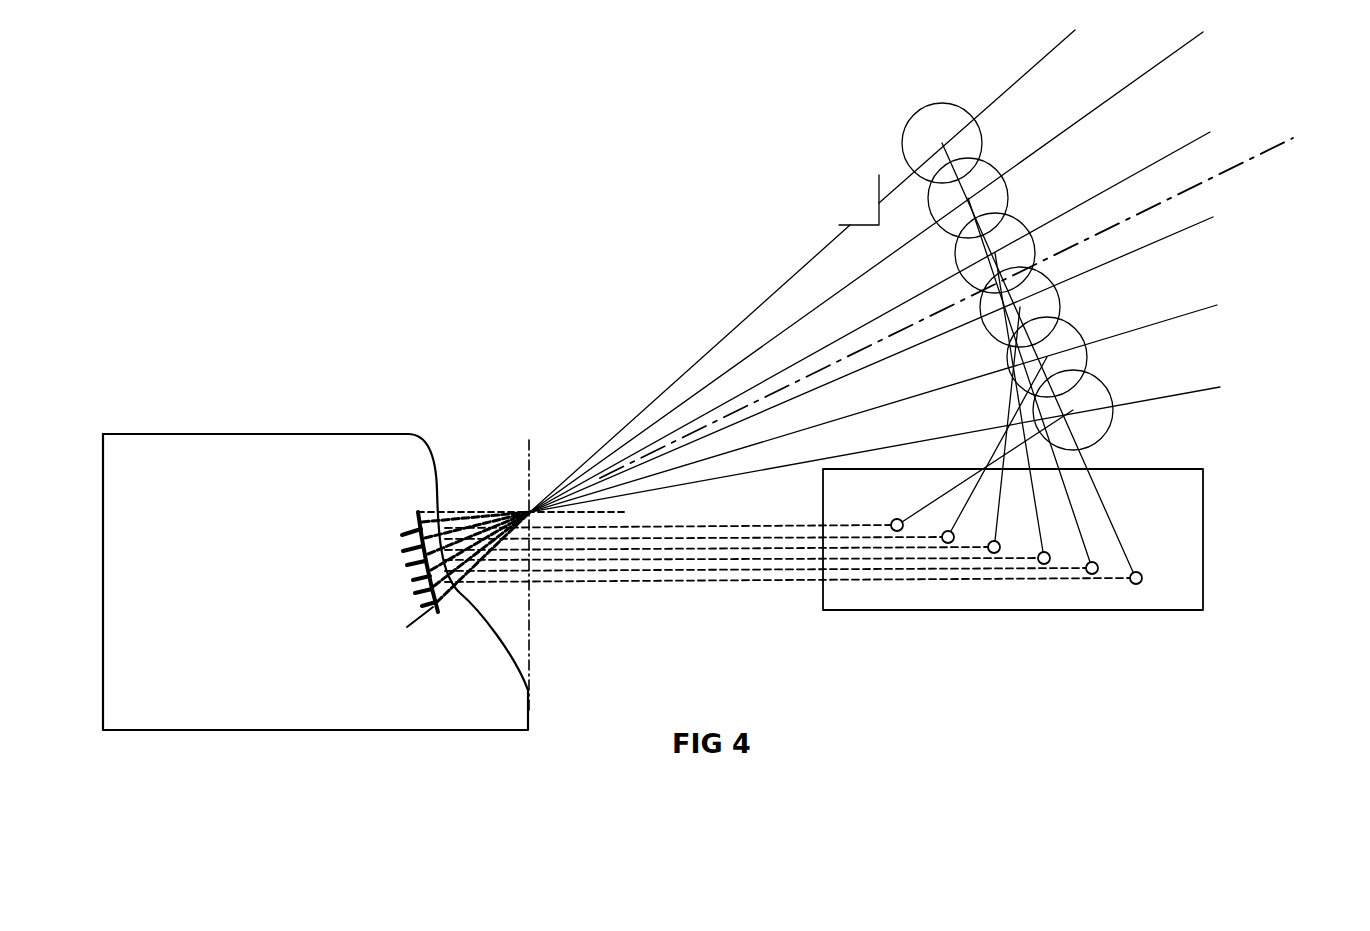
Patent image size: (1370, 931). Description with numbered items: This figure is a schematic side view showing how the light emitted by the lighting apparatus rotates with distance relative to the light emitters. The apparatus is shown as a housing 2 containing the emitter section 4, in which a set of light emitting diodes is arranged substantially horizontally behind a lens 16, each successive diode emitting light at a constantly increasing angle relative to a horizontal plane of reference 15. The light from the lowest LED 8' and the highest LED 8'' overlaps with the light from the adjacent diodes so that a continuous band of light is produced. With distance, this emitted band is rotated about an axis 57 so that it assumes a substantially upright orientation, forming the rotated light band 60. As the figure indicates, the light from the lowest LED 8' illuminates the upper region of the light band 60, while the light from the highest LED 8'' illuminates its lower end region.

The illumination unit housing 2 is at (262, 738).
The light source / emitter section 4 is at (225, 500).
The lowest LED 8' is at (404, 589).
The highest LED 8'' is at (414, 519).
The horizontal plane of reference 15 is at (731, 526).
The lens 16 is at (458, 598).
The axis 57 is at (1278, 150).
The rotated light band 60 is at (1000, 192).